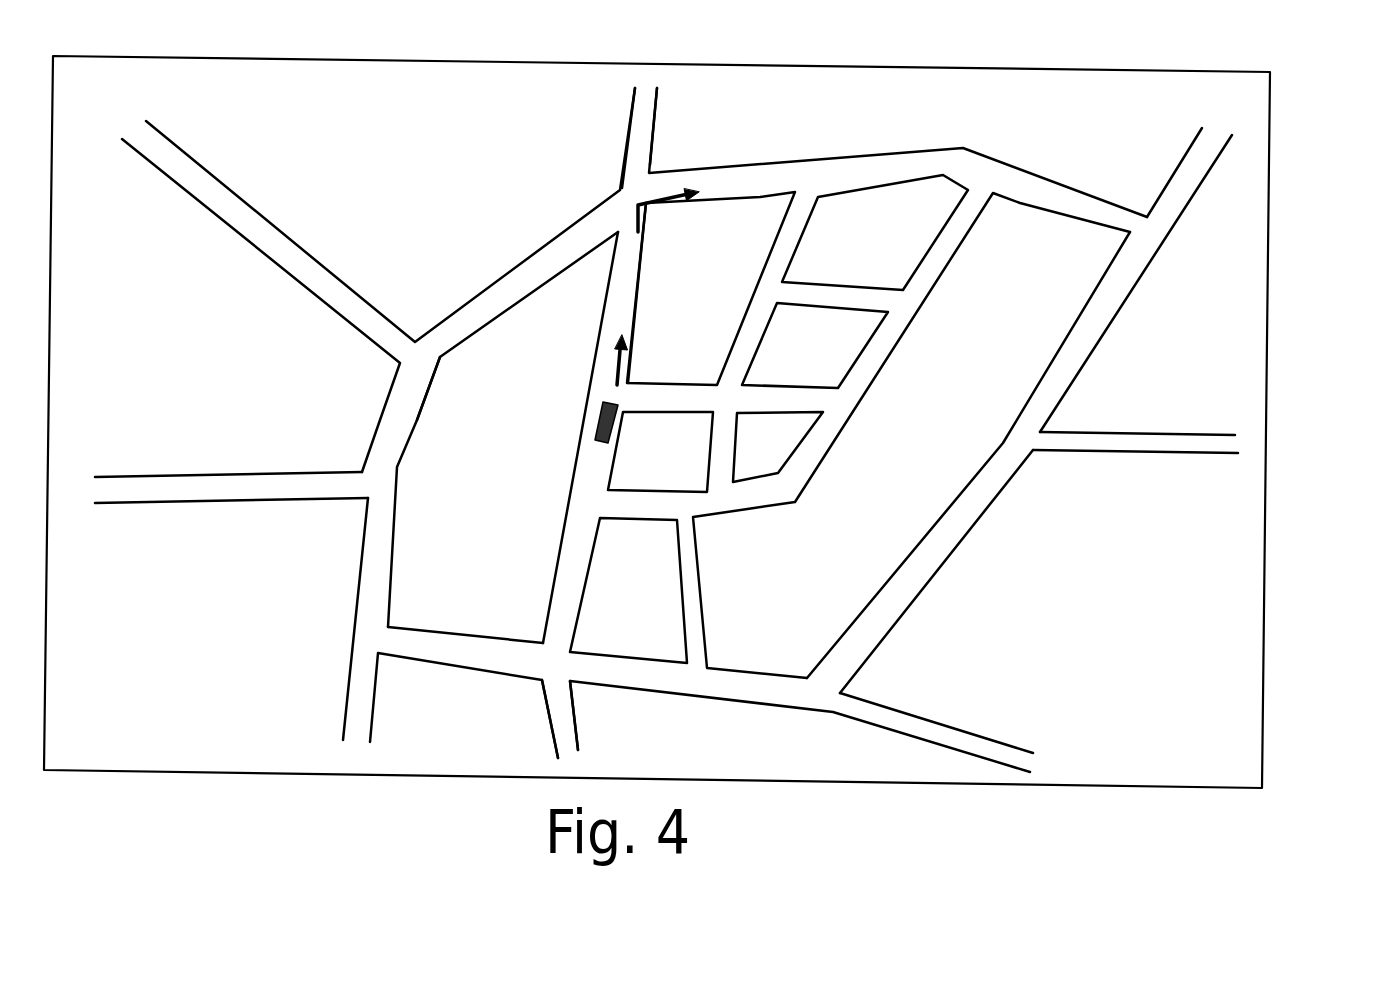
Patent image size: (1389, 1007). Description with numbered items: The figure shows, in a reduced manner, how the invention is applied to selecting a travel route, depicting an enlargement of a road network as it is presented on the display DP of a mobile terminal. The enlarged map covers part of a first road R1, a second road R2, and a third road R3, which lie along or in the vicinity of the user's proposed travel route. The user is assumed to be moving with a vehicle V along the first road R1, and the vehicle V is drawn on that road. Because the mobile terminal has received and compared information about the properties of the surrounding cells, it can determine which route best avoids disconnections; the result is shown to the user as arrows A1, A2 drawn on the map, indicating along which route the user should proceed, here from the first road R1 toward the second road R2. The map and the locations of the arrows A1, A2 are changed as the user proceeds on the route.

The display DP is at (1270, 203).
The first road R1 is at (553, 737).
The second road R2 is at (632, 115).
The third road R3 is at (1200, 158).
The arrow A1 is at (622, 362).
The arrow A2 is at (637, 213).
The vehicle V is at (597, 437).